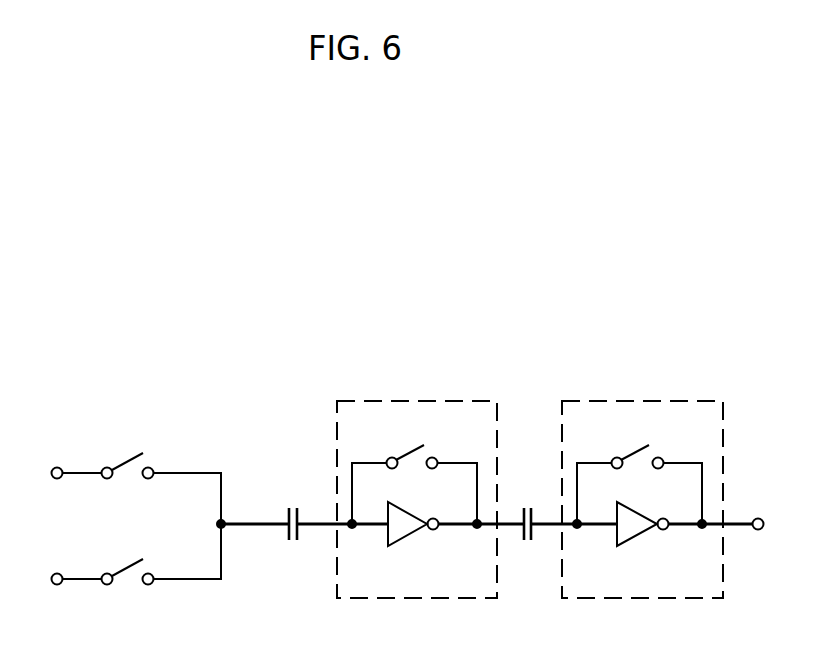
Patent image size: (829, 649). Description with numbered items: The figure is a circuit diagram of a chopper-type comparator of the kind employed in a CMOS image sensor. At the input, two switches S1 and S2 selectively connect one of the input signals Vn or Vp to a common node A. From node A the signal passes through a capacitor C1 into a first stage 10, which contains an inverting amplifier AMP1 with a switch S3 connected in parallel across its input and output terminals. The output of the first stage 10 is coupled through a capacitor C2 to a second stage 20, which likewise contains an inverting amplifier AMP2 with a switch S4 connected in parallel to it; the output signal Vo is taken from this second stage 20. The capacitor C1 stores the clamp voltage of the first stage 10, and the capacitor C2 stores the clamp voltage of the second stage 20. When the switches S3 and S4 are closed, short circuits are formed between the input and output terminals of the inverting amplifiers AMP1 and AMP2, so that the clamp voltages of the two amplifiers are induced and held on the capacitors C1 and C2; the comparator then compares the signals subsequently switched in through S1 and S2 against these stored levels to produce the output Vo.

The first stage 10 is at (430, 481).
The second stage 20 is at (641, 481).
The switch S1 is at (128, 453).
The switch S2 is at (128, 559).
The switch S3 is at (412, 444).
The switch S4 is at (638, 444).
The capacitor C1 is at (293, 509).
The capacitor C2 is at (528, 509).
The inverting amplifier AMP1 is at (420, 542).
The inverting amplifier AMP2 is at (647, 542).
The input signal Vn is at (59, 474).
The input signal Vp is at (59, 580).
The output signal Vo is at (775, 525).
The node A is at (210, 525).